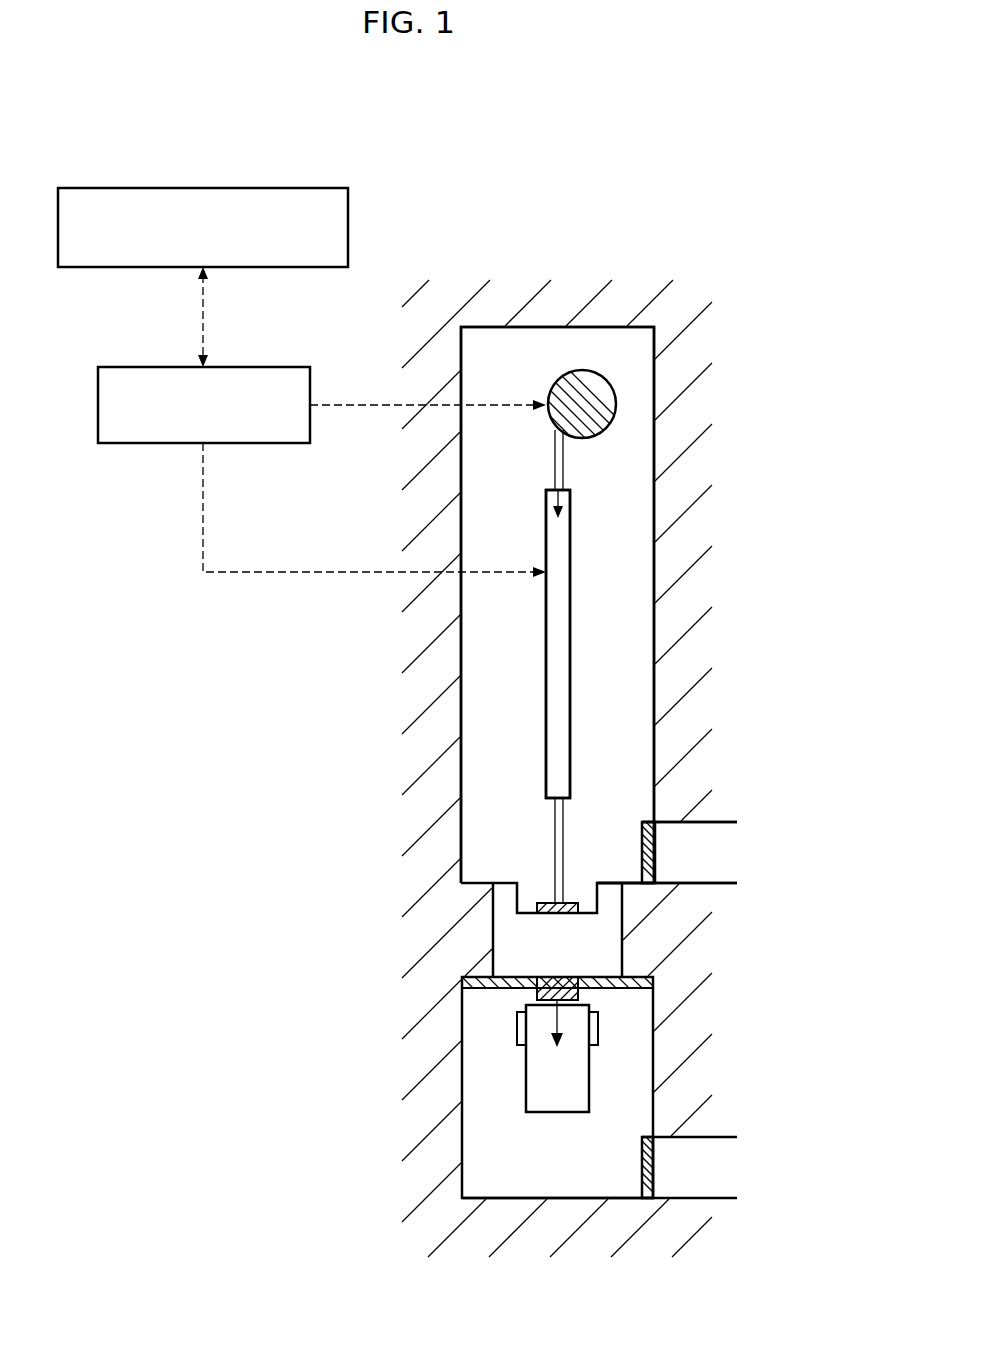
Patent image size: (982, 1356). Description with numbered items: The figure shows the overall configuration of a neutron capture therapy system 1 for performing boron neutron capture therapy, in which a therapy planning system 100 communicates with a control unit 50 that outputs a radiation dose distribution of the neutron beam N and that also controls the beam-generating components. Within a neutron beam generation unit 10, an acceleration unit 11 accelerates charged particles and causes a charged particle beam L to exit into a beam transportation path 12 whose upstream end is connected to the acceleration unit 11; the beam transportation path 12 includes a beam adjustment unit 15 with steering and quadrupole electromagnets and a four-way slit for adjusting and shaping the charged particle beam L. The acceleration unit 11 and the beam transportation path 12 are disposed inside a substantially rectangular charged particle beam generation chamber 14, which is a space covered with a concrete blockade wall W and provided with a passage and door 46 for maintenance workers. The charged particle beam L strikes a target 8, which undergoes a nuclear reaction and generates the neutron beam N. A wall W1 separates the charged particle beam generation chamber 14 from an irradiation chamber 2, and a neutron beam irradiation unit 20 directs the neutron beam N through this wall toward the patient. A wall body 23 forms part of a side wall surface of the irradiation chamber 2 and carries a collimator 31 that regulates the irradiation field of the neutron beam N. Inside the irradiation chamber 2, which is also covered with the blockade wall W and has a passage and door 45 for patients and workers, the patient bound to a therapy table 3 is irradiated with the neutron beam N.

The neutron capture therapy system 1 is at (746, 308).
The therapy planning system 100 is at (242, 187).
The control unit 50 is at (283, 366).
The acceleration unit 11 is at (582, 370).
The charged particle beam generation chamber 14 is at (508, 366).
The charged particle beam L is at (567, 467).
The beam transportation path 12 is at (578, 586).
The beam adjustment unit 15 is at (560, 652).
The blockade wall W is at (683, 625).
The neutron beam generation unit 10 is at (666, 794).
The door 46 is at (640, 830).
The target 8 is at (547, 903).
The wall W1 is at (675, 888).
The neutron beam irradiation unit 20 is at (634, 951).
The wall body 23 is at (615, 985).
The collimator 31 is at (540, 975).
The neutron beam N is at (555, 1018).
The therapy table 3 is at (525, 1092).
The irradiation chamber 2 is at (495, 1182).
The door 45 is at (642, 1167).